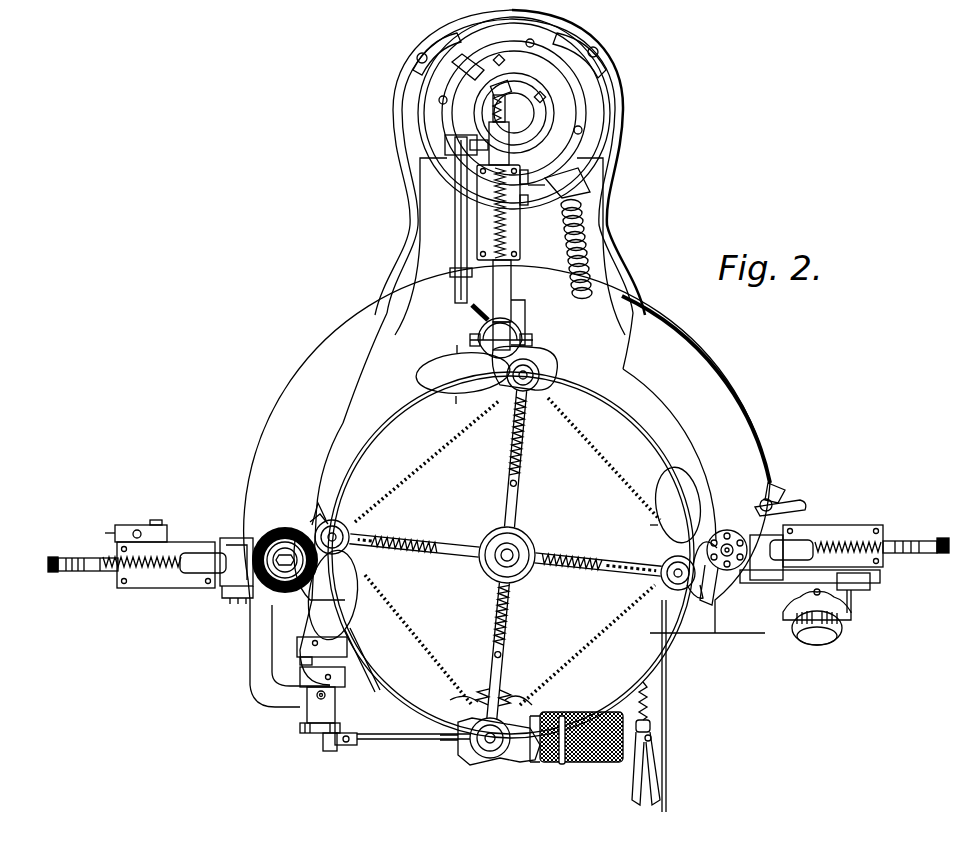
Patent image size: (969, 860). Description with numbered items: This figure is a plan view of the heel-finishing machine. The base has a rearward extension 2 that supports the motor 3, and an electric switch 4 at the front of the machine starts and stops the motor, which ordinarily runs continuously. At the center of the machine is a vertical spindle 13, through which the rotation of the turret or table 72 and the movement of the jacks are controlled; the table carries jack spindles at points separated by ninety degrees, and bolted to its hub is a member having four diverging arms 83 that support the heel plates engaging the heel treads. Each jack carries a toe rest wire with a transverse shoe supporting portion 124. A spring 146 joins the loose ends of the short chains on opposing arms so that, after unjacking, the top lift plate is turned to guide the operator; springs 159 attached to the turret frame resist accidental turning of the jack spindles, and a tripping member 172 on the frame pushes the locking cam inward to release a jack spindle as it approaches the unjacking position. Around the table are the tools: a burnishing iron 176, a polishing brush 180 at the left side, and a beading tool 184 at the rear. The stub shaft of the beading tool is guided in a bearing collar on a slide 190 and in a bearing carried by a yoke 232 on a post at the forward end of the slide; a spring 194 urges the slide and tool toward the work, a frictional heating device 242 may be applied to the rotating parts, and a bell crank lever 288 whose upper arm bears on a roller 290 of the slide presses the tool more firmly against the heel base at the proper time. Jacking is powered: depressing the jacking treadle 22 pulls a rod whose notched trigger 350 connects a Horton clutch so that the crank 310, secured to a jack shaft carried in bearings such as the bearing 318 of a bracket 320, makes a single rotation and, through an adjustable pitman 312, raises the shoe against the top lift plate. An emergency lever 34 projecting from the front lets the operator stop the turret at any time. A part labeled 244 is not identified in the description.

The rearward extension 2 is at (628, 142).
The motor 3 is at (455, 113).
The electric switch 4 is at (840, 640).
The vertical spindle 13 is at (513, 570).
The jacking treadle 22 is at (600, 762).
The emergency lever 34 is at (662, 703).
The turret or table 72 is at (647, 430).
The diverging arms 83 is at (527, 453).
The transverse shoe supporting portion 124 is at (457, 347).
The spring 146 is at (508, 500).
The springs 159 is at (423, 627).
The tripping member 172 is at (350, 660).
The burnishing iron 176 is at (747, 590).
The polishing brush 180 is at (273, 587).
The beading tool 184 is at (500, 395).
The slide 190 is at (502, 272).
The spring 194 is at (493, 203).
The yoke 232 is at (480, 326).
The frictional heating device 242 is at (480, 320).
The blade 244 is at (310, 522).
The bell crank lever 288 is at (460, 253).
The roller 290 is at (478, 157).
The crank 310 is at (315, 733).
The adjustable pitman 312 is at (423, 743).
The bearing 318 is at (295, 715).
The bracket 320 is at (260, 672).
The notched trigger 350 is at (273, 683).